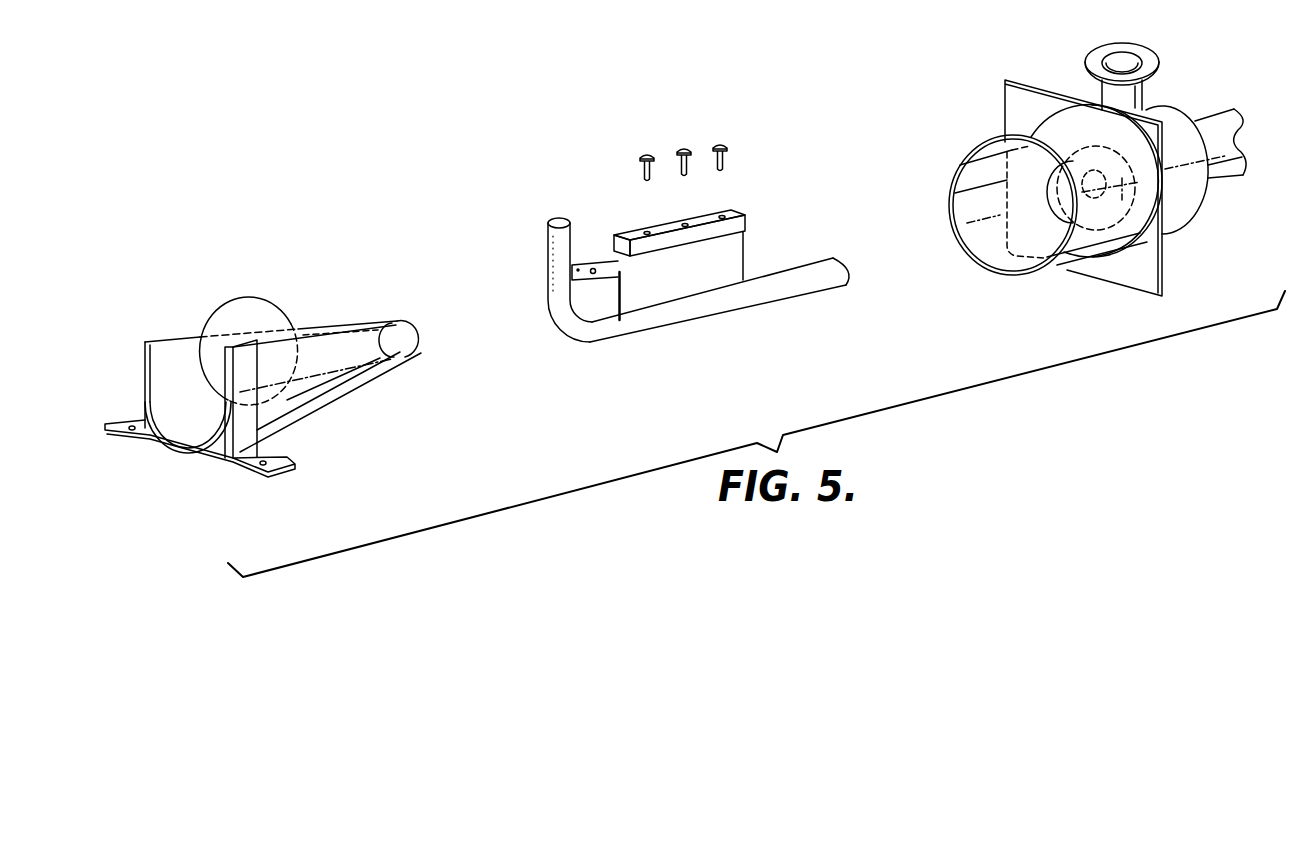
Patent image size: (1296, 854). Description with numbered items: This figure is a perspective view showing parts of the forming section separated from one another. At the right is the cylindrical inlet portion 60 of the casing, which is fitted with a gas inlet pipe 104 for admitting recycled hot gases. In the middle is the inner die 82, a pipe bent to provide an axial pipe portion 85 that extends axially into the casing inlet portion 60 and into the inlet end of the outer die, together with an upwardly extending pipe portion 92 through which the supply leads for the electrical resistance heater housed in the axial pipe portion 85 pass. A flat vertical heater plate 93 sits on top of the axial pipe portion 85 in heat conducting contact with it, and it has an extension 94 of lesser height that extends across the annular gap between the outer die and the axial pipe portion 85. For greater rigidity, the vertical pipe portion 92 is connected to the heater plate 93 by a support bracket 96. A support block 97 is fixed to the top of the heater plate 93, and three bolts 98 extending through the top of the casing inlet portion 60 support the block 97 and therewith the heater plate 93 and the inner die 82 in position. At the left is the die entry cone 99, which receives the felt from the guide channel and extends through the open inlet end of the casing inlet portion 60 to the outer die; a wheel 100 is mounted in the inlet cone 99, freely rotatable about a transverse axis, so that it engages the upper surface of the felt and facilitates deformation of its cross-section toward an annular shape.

The cylindrical inlet portion 60 is at (1058, 274).
The inner die 82 is at (649, 344).
The axial pipe portion 85 is at (767, 294).
The upwardly extending pipe portion 92 is at (552, 240).
The heater plate 93 is at (713, 275).
The extension 94 is at (806, 268).
The support bracket 96 is at (574, 265).
The support block 97 is at (745, 213).
The bolts 98 is at (720, 143).
The die entry cone 99 is at (333, 383).
The wheel 100 is at (229, 315).
The gas inlet pipe 104 is at (1148, 98).